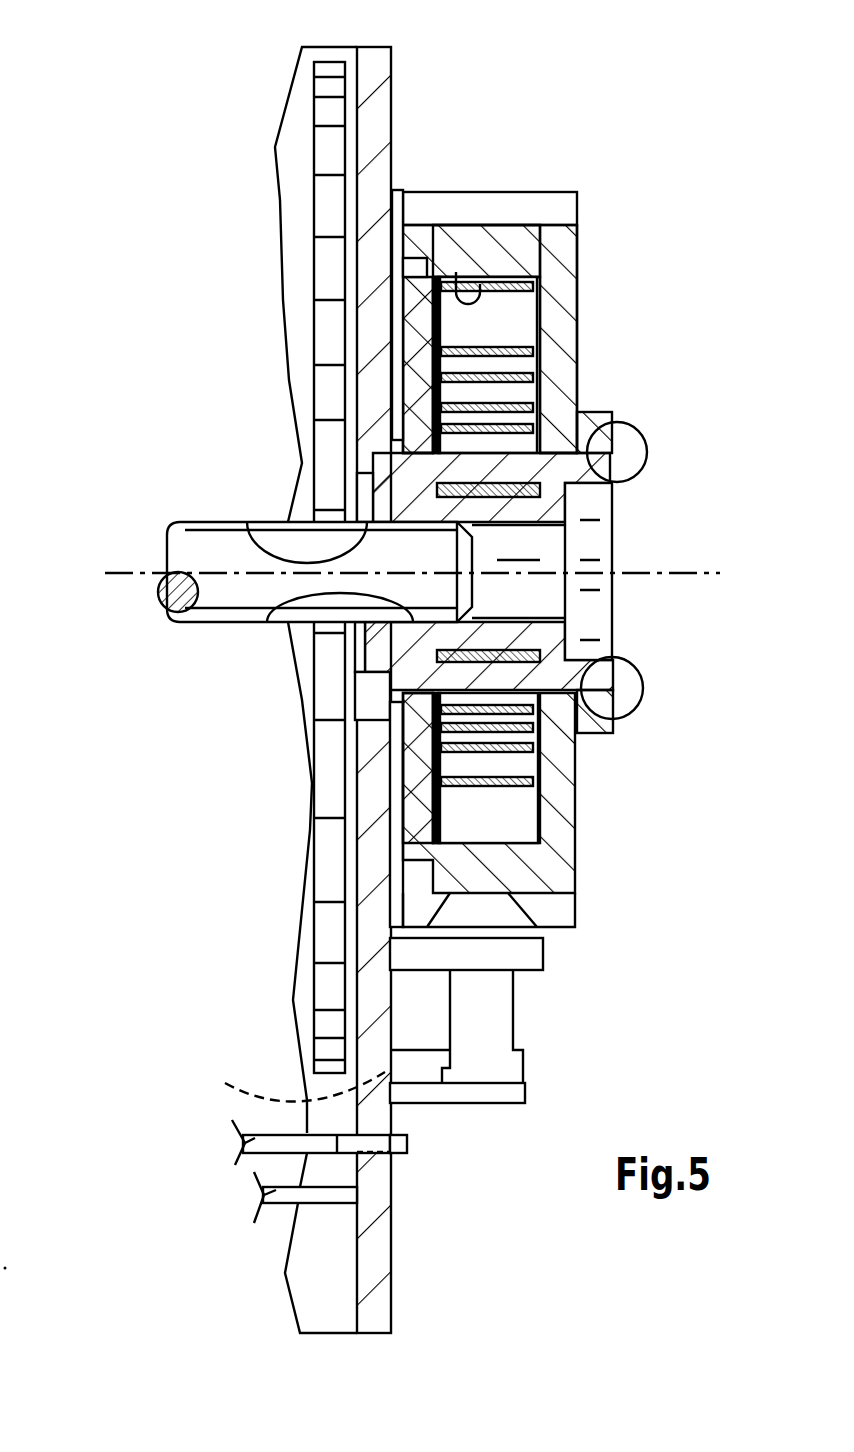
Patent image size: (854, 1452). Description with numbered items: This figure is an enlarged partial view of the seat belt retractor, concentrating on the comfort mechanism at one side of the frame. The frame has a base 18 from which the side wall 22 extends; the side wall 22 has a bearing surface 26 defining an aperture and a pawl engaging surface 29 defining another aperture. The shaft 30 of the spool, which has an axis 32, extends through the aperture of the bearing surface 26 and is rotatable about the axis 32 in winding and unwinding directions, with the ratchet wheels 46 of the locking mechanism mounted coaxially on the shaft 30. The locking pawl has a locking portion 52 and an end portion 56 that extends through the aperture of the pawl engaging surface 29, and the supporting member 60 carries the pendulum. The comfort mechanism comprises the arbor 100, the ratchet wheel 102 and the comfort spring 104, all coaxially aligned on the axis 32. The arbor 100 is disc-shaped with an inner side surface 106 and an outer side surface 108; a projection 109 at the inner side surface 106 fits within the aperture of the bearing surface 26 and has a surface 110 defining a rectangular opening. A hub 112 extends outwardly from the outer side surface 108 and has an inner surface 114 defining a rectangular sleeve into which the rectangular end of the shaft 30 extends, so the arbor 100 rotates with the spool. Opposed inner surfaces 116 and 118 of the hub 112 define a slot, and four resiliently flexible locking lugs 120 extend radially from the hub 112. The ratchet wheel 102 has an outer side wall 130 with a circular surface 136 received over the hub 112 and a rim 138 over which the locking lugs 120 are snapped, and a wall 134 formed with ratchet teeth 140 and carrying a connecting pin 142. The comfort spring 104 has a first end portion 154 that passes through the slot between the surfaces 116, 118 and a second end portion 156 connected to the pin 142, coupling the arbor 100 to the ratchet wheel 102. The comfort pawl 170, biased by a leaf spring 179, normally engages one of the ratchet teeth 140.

The base 18 is at (300, 100).
The side wall 22 is at (384, 96).
The ratchet wheels 46 is at (330, 147).
The arbor 100 is at (488, 268).
The inner side surface 106 is at (400, 380).
The projection 109 is at (365, 455).
The bearing surface 26 is at (476, 655).
The axis 32 is at (120, 570).
The surface 110 is at (247, 522).
The shaft 30 is at (222, 592).
The inner surface 114 is at (267, 622).
The first end portion 154 is at (452, 523).
The connecting pin 142 is at (460, 268).
The wall 134 is at (484, 252).
The second end portion 156 is at (563, 203).
The ratchet teeth 140 is at (566, 268).
The outer side wall 130 is at (573, 257).
The outer side surface 108 is at (442, 332).
The comfort spring 104 is at (497, 370).
The hub 112 is at (639, 419).
The locking lugs 120 is at (610, 428).
The inner surface 118 is at (607, 507).
The inner surface 116 is at (607, 557).
The circular surface 136 is at (587, 682).
The rim 138 is at (593, 715).
The ratchet wheel 102 is at (563, 896).
The comfort pawl 170 is at (490, 918).
The leaf spring 179 is at (488, 1013).
The pawl engaging surface 29 is at (303, 1082).
The locking portion 52 is at (359, 1163).
The end portion 56 is at (407, 1142).
The supporting member 60 is at (277, 1195).